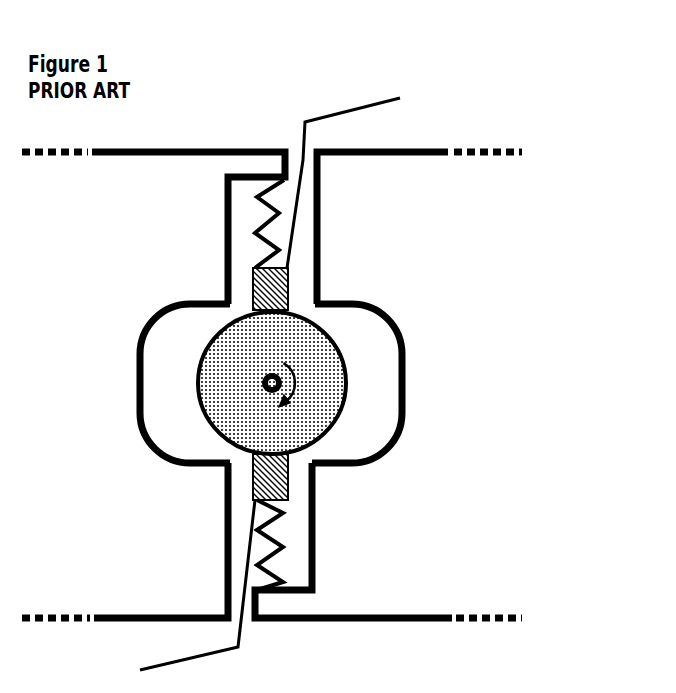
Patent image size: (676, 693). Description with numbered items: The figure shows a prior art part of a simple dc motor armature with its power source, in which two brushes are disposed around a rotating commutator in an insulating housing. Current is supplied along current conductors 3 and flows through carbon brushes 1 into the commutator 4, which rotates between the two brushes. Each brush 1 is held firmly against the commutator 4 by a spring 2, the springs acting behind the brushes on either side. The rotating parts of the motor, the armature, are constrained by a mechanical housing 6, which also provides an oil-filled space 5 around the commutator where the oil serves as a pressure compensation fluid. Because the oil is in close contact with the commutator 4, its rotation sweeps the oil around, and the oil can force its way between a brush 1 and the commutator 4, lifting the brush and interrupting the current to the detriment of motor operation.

The carbon brush 1 is at (304, 302).
The spring 2 is at (288, 203).
The current conductor 3 is at (385, 114).
The commutator 4 is at (360, 371).
The oil-filled space 5 is at (379, 418).
The mechanical housing 6 is at (134, 529).